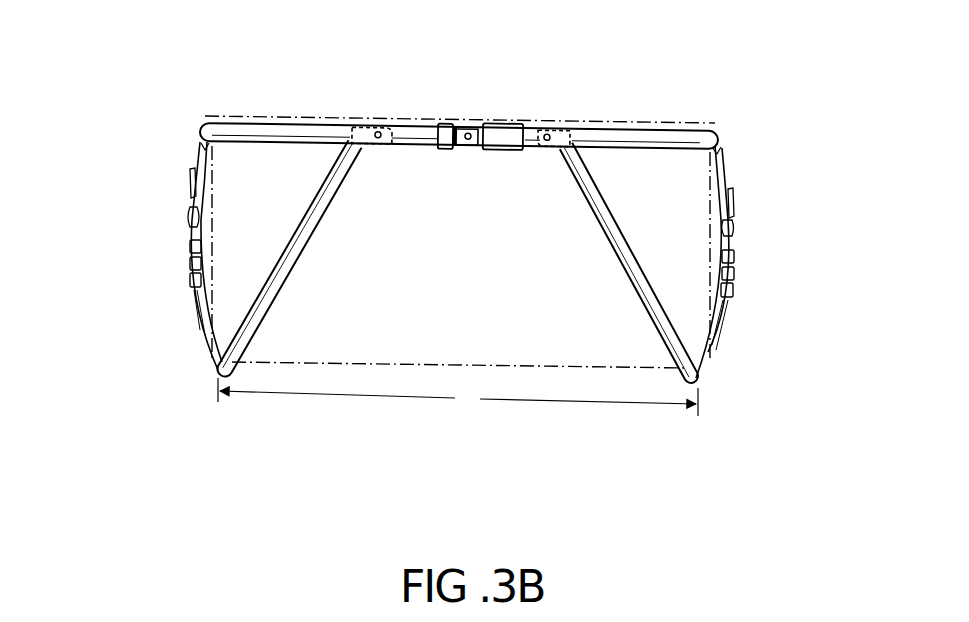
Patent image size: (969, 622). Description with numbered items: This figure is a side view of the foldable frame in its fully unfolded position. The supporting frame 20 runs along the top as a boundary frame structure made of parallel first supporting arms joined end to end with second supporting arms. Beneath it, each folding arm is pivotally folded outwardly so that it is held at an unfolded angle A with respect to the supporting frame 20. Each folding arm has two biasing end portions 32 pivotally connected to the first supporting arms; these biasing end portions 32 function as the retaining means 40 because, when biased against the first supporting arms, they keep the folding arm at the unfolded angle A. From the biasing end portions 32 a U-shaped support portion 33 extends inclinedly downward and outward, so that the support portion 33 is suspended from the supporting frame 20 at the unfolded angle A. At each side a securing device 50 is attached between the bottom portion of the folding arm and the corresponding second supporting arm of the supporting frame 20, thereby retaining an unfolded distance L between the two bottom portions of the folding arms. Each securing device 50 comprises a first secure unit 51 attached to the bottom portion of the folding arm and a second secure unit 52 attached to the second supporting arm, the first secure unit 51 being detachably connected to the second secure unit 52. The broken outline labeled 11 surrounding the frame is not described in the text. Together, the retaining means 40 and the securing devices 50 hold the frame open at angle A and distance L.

The cloth / shade fabric 11 is at (230, 163).
The supporting frame 20 is at (462, 147).
The biasing end portion 32 is at (366, 127).
The retaining means 40 is at (416, 98).
The U-shaped support portion 33 is at (297, 196).
The securing device 50 is at (123, 256).
The first secure unit 51 is at (198, 162).
The second secure unit 52 is at (203, 320).
The unfolded angle A is at (400, 149).
The unfolded distance L is at (458, 399).